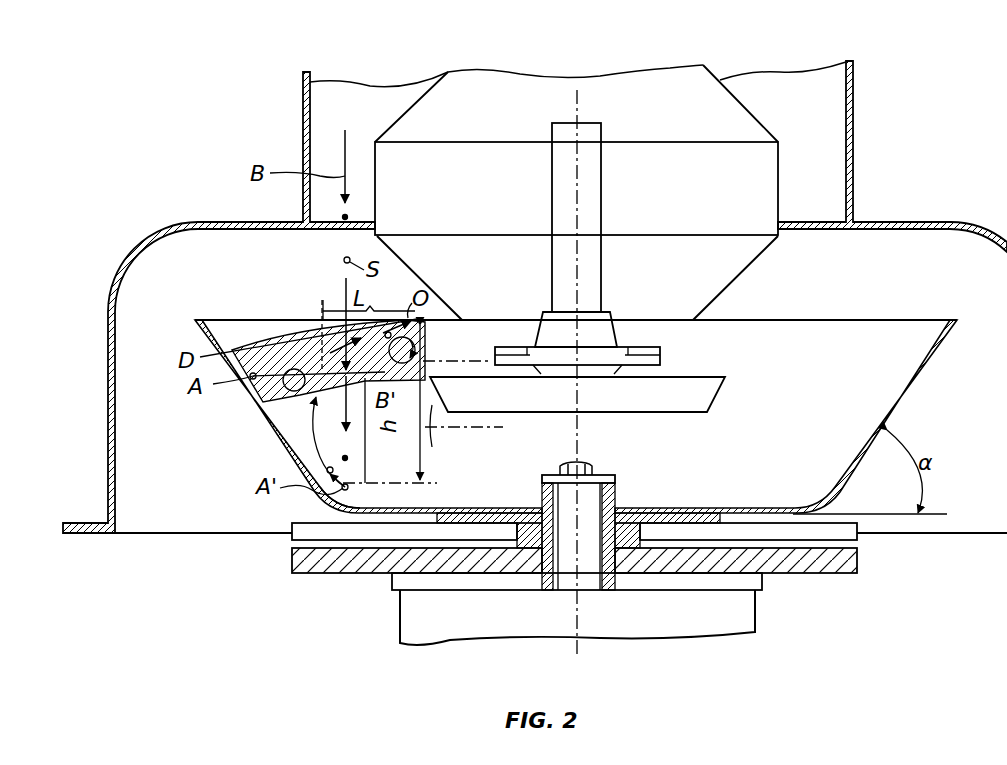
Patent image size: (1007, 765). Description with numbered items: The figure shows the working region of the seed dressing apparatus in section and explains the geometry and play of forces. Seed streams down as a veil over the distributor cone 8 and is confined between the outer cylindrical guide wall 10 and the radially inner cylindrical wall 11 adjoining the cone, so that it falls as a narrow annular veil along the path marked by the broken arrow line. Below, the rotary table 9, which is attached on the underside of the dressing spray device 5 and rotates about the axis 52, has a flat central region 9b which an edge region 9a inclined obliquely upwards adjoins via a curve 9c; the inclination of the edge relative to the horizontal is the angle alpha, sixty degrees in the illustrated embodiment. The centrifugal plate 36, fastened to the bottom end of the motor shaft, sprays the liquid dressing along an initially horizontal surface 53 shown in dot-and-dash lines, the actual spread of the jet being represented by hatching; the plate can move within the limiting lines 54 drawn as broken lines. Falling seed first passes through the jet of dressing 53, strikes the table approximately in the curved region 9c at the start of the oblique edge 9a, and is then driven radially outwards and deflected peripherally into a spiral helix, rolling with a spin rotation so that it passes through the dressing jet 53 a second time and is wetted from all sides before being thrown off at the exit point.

The distributor cone 8 is at (400, 100).
The outer cylindrical guide wall 10 is at (314, 128).
The radially inner cylindrical wall 11 is at (372, 158).
The rotary table 9 is at (576, 403).
The edge region 9a is at (270, 422).
The flat central region 9b is at (467, 508).
The curve 9c is at (332, 503).
The jet of dressing 53 is at (435, 362).
The limiting lines 54 is at (480, 427).
The centrifugal plate 36 is at (553, 413).
The dressing spray device 5 is at (432, 447).
The axis 52 is at (560, 596).